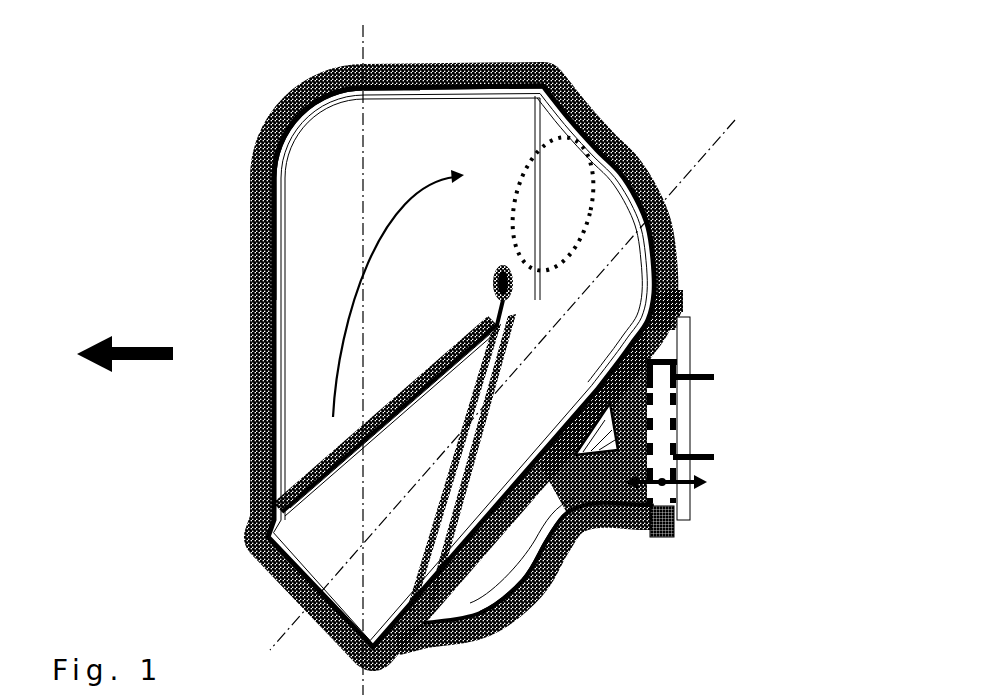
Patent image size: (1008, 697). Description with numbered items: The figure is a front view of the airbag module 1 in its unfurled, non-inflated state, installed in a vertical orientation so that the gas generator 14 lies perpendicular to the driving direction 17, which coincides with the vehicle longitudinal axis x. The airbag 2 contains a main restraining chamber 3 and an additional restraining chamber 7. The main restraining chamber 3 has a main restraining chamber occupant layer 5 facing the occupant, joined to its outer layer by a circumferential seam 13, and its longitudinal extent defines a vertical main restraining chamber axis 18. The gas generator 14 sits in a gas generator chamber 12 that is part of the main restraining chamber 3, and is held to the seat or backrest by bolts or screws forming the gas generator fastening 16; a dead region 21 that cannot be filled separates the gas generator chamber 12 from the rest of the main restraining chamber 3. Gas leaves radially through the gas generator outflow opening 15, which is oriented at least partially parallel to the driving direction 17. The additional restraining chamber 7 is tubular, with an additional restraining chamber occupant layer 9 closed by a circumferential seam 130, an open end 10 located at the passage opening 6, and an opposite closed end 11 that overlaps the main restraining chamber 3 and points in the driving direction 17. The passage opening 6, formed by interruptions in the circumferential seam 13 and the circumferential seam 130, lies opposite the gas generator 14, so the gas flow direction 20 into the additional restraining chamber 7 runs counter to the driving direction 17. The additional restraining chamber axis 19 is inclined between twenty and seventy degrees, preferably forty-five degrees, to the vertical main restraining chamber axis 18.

The airbag module 1 is at (193, 61).
The airbag 2 is at (792, 123).
The main restraining chamber 3 is at (408, 367).
The main restraining chamber occupant layer 5 is at (364, 308).
The passage opening 6 is at (575, 135).
The additional restraining chamber 7 is at (560, 590).
The additional restraining chamber occupant layer 9 is at (470, 647).
The open end 10 is at (617, 203).
The closed end 11 is at (295, 550).
The gas generator chamber 12 is at (690, 317).
The circumferential seam 13 is at (339, 164).
The gas generator 14 is at (675, 533).
The gas generator outflow opening 15 is at (677, 490).
The gas generator fastening 16 is at (714, 380).
The driving direction 17 is at (133, 360).
The main restraining chamber axis 18 is at (428, 64).
The additional restraining chamber axis 19 is at (720, 140).
The gas flow direction 20 is at (335, 421).
The dead region 21 is at (608, 495).
The circumferential seam 130 is at (680, 240).